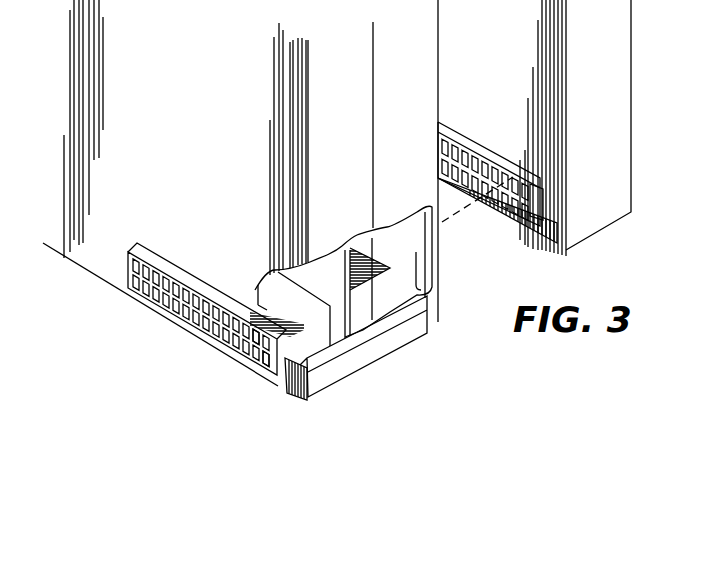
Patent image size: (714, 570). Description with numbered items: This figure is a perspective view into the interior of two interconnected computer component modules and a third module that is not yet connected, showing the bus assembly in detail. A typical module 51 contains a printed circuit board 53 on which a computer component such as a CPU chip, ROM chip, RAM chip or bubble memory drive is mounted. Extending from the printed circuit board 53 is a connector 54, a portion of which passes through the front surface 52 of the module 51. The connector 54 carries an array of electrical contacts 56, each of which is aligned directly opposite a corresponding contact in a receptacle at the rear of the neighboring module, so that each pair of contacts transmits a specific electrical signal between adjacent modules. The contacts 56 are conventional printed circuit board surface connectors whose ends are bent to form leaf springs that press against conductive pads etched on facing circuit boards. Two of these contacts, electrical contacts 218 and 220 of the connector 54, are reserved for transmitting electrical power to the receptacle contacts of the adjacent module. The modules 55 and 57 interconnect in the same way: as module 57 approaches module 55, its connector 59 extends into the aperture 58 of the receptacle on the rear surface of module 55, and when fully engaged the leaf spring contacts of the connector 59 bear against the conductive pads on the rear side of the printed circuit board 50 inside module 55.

The printed circuit board 50 is at (400, 258).
The component module 51 is at (116, 293).
The front surface 52 is at (185, 167).
The printed circuit board 53 is at (330, 289).
The connector 54 is at (286, 380).
The component module 55 is at (431, 337).
The electrical contacts 56 is at (207, 320).
The component module 57 is at (631, 214).
The aperture 58 is at (418, 271).
The connector 59 is at (562, 249).
The electrical contact 218 is at (263, 386).
The electrical contact 220 is at (256, 367).